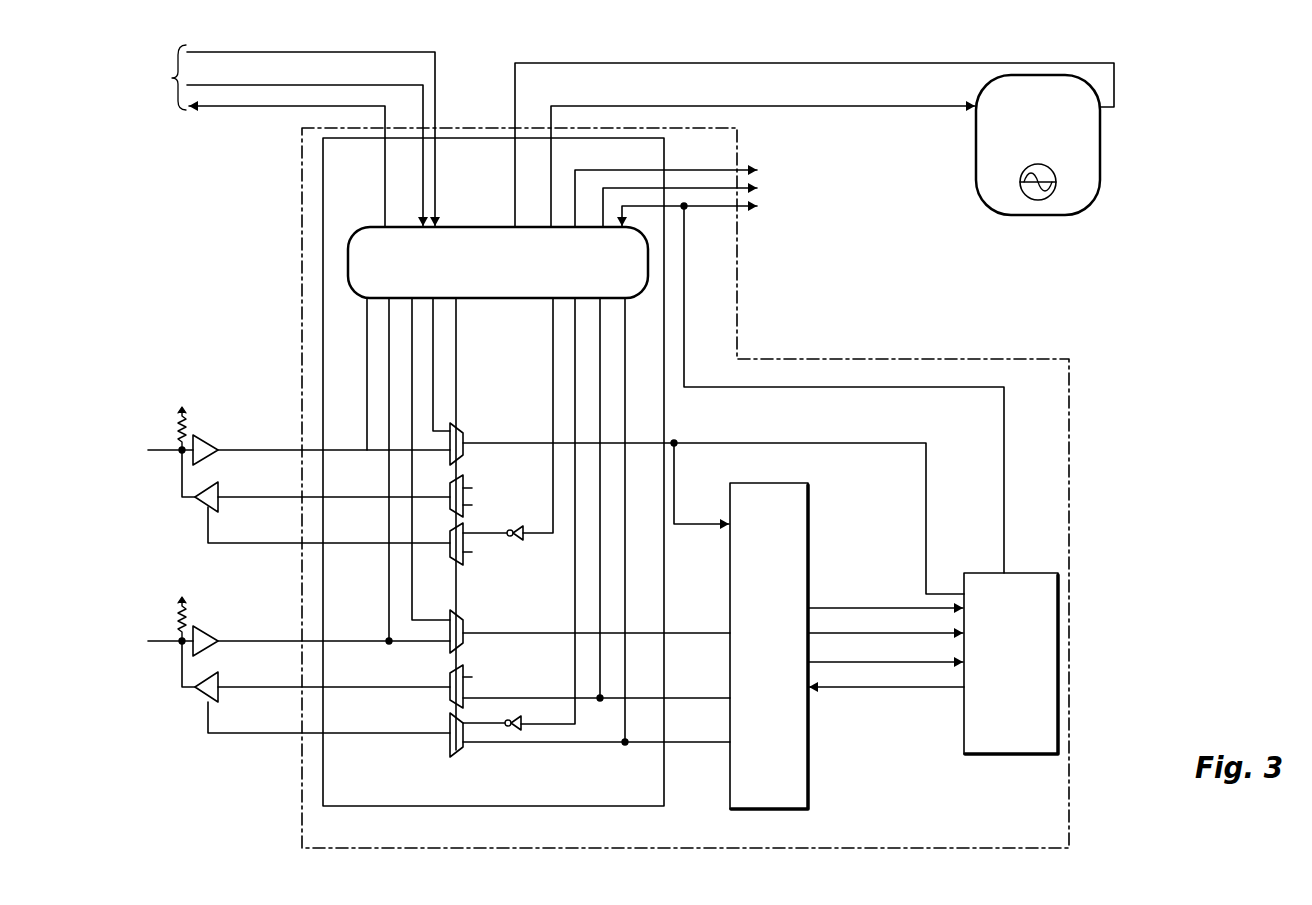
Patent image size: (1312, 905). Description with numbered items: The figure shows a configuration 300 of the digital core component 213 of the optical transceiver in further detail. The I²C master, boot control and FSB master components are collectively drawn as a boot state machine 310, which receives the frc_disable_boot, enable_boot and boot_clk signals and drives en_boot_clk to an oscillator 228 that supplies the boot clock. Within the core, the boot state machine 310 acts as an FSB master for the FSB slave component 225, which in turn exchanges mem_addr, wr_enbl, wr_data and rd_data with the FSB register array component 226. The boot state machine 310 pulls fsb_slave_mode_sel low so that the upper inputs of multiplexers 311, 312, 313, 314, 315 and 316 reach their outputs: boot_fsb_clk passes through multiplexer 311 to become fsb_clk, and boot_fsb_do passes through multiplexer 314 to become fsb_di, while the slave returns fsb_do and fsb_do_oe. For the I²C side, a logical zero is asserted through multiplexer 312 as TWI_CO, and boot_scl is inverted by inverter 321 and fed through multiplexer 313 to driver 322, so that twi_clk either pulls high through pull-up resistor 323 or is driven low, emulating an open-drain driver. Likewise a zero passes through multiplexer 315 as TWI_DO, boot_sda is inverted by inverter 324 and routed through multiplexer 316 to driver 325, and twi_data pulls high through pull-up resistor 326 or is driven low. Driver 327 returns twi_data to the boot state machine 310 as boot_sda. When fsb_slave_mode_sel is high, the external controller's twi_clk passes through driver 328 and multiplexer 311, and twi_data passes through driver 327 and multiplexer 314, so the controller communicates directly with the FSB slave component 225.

The configuration 300 is at (1190, 88).
The digital core component 213 is at (790, 356).
The oscillator 228 is at (1098, 147).
The boot state machine 310 is at (604, 289).
The FSB slave component 225 is at (755, 682).
The FSB register array component 226 is at (996, 707).
The multiplexer 311 is at (464, 436).
The multiplexer 312 is at (464, 478).
The multiplexer 313 is at (464, 563).
The multiplexer 314 is at (464, 614).
The multiplexer 315 is at (450, 672).
The multiplexer 316 is at (450, 750).
The inverter 321 is at (520, 540).
The inverter 324 is at (521, 731).
The driver 322 is at (200, 503).
The pull-up resistor 323 is at (178, 424).
The driver 325 is at (200, 693).
The pull-up resistor 326 is at (178, 614).
The driver 327 is at (196, 630).
The driver 328 is at (196, 440).